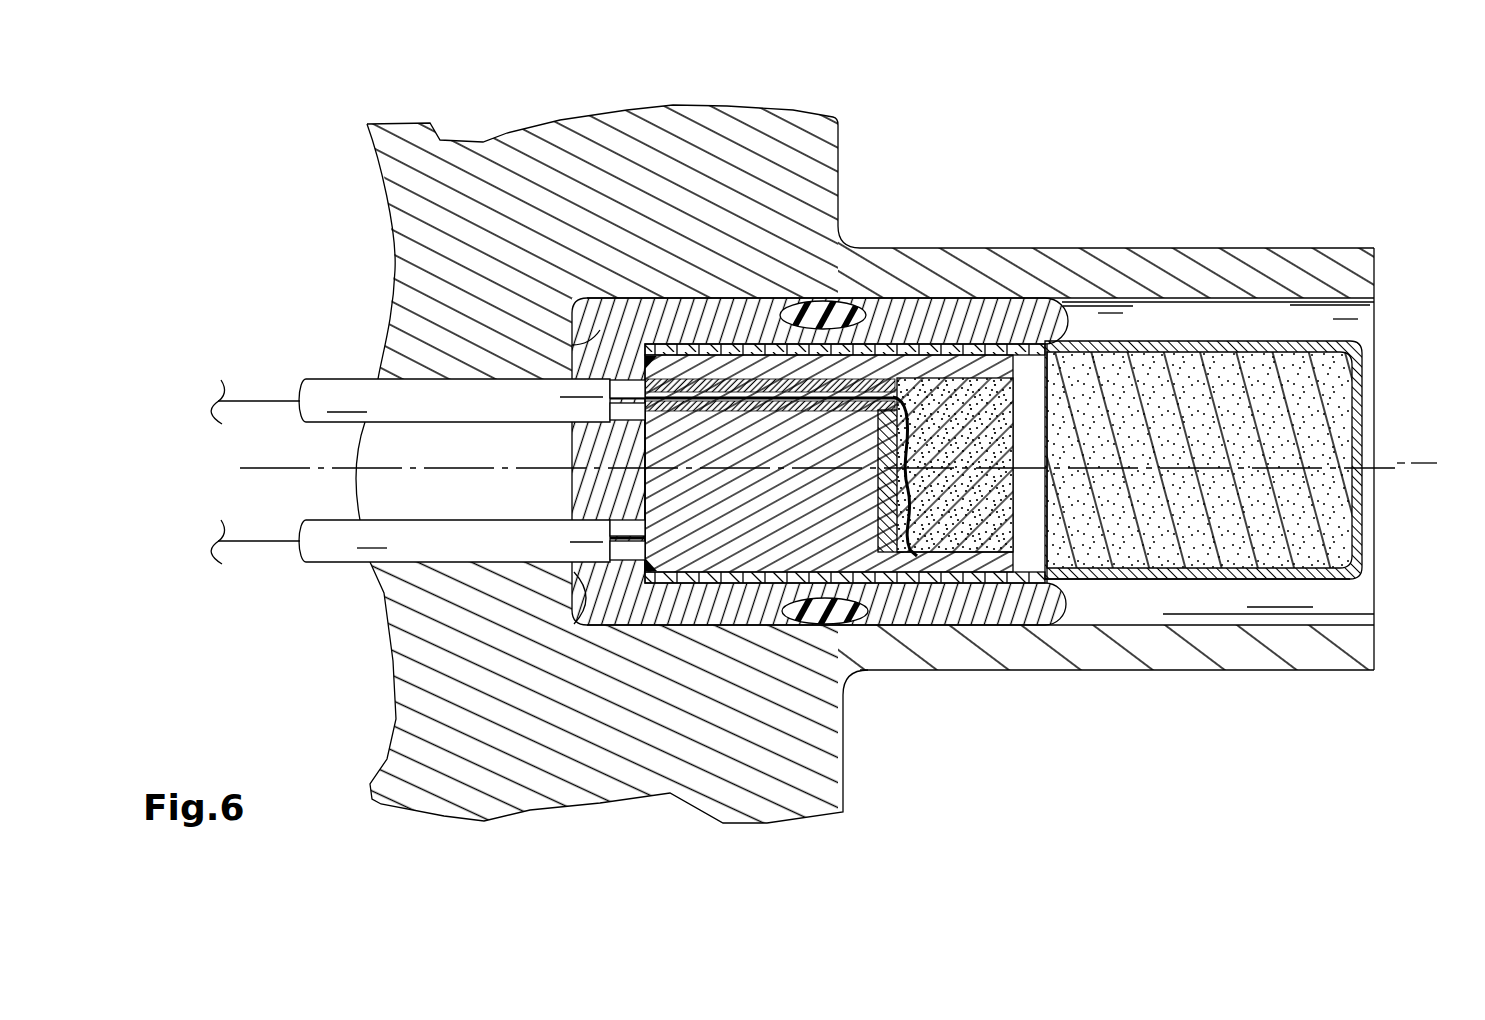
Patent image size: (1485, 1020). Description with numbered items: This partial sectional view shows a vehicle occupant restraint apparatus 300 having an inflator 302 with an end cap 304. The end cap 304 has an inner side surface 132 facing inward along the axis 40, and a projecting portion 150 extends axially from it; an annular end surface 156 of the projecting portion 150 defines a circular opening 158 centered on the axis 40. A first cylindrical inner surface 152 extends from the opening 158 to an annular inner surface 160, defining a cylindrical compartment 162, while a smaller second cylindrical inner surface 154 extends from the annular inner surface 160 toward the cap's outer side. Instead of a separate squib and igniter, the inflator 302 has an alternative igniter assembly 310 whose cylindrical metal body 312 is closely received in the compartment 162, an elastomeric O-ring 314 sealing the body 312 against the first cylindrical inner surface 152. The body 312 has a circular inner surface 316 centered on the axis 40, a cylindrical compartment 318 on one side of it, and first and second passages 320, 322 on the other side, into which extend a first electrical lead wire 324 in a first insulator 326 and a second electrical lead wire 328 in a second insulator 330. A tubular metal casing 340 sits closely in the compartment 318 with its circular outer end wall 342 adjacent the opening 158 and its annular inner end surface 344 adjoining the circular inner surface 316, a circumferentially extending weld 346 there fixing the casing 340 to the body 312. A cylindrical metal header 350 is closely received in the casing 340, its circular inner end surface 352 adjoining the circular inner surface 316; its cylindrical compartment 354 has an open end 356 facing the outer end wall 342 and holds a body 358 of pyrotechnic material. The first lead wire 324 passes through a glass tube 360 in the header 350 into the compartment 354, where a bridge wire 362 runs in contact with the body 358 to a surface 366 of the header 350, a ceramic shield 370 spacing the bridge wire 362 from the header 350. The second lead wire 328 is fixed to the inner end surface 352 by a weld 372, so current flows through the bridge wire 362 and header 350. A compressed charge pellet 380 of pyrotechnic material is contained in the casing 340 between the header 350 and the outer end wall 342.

The vehicle occupant restraint apparatus 300 is at (810, 432).
The inflator 302 is at (375, 190).
The end cap 304 is at (415, 250).
The inner side surface 132 is at (838, 155).
The projecting portion 150 is at (1185, 270).
The first cylindrical inner surface 152 is at (1215, 612).
The second cylindrical inner surface 154 is at (380, 580).
The annular end surface 156 is at (1375, 268).
The circular opening 158 is at (1382, 320).
The annular inner surface 160 is at (548, 600).
The cylindrical compartment 162 is at (1282, 327).
The alternative igniter assembly 310 is at (820, 339).
The cylindrical metal body 312 is at (662, 313).
The elastomeric O-ring 314 is at (837, 303).
The circular inner surface 316 is at (572, 490).
The cylindrical compartment 318 is at (704, 582).
The first passage 320 is at (565, 397).
The second passage 322 is at (530, 539).
The first electrical lead wire 324 is at (247, 402).
The first insulator 326 is at (340, 392).
The second electrical lead wire 328 is at (252, 562).
The second insulator 330 is at (325, 547).
The tubular metal casing 340 is at (1300, 579).
The circular outer end wall 342 is at (1362, 408).
The annular inner end surface 344 is at (640, 360).
The circumferentially extending weld 346 is at (590, 345).
The cylindrical metal header 350 is at (758, 560).
The circular inner end surface 352 is at (572, 460).
The cylindrical compartment 354 is at (985, 560).
The open end 356 is at (1014, 516).
The body of pyrotechnic material 358 is at (887, 628).
The glass tube 360 is at (865, 365).
The bridge wire 362 is at (905, 420).
The surface 366 is at (1008, 545).
The ceramic shield 370 is at (893, 440).
The weld 372 is at (652, 529).
The compressed charge pellet 380 is at (1320, 497).
The axis 40 is at (1417, 459).